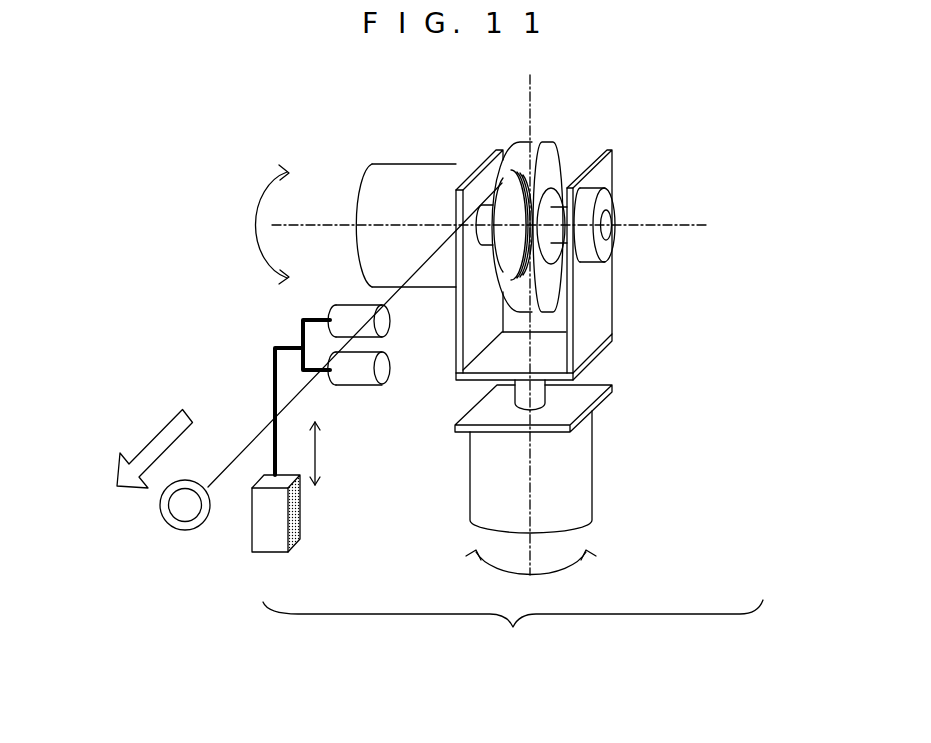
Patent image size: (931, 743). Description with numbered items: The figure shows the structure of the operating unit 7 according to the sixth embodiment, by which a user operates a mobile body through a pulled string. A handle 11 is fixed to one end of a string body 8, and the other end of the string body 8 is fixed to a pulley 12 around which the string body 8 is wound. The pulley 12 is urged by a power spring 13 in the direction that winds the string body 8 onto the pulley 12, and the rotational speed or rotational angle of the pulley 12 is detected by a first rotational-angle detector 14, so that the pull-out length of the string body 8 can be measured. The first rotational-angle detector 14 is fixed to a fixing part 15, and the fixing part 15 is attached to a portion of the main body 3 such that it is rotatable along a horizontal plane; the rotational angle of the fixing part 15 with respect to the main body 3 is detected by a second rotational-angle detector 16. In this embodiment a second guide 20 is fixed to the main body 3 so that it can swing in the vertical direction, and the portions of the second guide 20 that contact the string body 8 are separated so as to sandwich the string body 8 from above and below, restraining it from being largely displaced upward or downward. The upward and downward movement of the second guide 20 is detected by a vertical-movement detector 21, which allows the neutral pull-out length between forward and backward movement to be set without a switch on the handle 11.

The main body 3 is at (588, 393).
The operating unit 7 is at (513, 630).
The string body 8 is at (232, 458).
The handle 11 is at (185, 515).
The pulley 12 is at (550, 150).
The power spring 13 is at (607, 203).
The first rotational-angle detector 14 is at (410, 195).
The fixing part 15 is at (592, 298).
The second rotational-angle detector 16 is at (577, 485).
The second guide 20 is at (360, 375).
The vertical-movement detector 21 is at (300, 537).